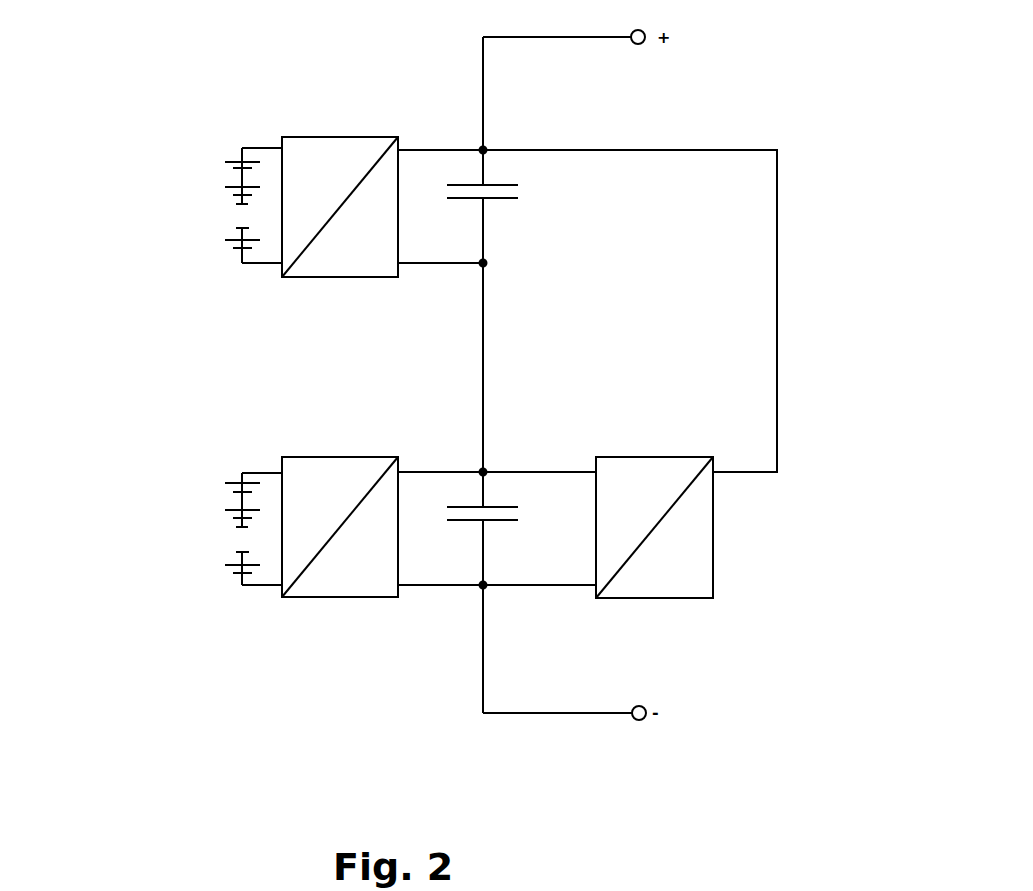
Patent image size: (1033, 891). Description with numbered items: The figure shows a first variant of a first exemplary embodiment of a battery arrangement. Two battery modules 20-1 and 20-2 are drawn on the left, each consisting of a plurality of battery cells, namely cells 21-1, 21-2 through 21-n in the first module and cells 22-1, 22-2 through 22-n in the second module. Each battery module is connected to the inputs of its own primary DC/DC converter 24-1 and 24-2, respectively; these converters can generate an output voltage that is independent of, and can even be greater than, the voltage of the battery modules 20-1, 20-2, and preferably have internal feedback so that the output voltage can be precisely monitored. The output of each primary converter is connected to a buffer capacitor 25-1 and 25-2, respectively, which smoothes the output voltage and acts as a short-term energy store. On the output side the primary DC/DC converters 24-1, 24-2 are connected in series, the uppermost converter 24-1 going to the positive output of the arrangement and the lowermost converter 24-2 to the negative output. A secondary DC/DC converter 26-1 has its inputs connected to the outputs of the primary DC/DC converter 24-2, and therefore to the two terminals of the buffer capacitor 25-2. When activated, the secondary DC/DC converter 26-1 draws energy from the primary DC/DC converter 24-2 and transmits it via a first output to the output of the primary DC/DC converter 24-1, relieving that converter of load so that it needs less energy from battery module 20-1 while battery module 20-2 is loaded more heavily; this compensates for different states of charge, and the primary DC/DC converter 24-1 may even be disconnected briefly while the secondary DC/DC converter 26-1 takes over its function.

The battery module 20-1 is at (150, 155).
The battery module 20-2 is at (150, 477).
The battery cell 21-1 is at (219, 161).
The battery cell 21-2 is at (219, 189).
The battery cell 21-n is at (219, 241).
The battery cell 22-1 is at (219, 485).
The battery cell 22-2 is at (219, 514).
The battery cell 22-n is at (219, 564).
The primary DC/DC converter 24-1 is at (348, 148).
The primary DC/DC converter 24-2 is at (348, 468).
The buffer capacitor 25-1 is at (505, 200).
The buffer capacitor 25-2 is at (505, 522).
The secondary DC/DC converter 26-1 is at (645, 468).